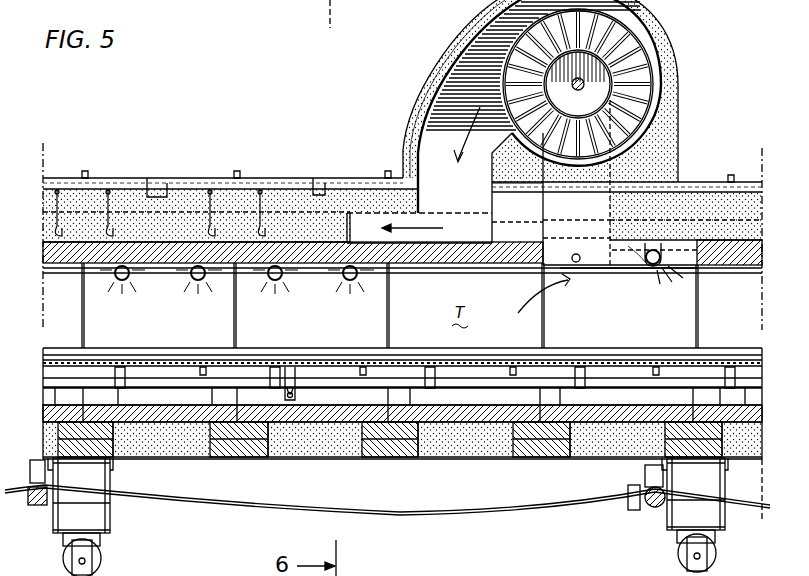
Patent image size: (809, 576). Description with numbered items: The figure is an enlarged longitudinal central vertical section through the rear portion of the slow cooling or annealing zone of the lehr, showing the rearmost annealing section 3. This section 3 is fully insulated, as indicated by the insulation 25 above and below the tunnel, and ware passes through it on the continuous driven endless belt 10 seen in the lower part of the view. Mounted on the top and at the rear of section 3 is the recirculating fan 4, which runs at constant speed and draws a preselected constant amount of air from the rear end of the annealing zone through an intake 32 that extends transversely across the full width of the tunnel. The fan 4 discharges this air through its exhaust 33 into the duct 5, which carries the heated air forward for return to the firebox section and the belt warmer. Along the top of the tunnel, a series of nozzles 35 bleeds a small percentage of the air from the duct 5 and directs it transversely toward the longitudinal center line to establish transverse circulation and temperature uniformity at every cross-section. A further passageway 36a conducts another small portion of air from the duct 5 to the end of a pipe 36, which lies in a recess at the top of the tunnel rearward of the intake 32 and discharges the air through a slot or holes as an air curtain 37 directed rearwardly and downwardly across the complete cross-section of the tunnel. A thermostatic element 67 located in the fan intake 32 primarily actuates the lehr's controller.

The section 3 is at (284, 176).
The recirculating fan 4 is at (637, 60).
The duct 5 is at (470, 233).
The endless belt 10 is at (407, 358).
The insulation 25 is at (187, 190).
The intake 32 is at (597, 257).
The exhaust 33 is at (440, 178).
The nozzles 35 is at (193, 283).
The pipe 36 is at (650, 263).
The passageway 36a is at (575, 226).
The air curtain 37 is at (667, 263).
The thermostatic element 67 is at (571, 262).